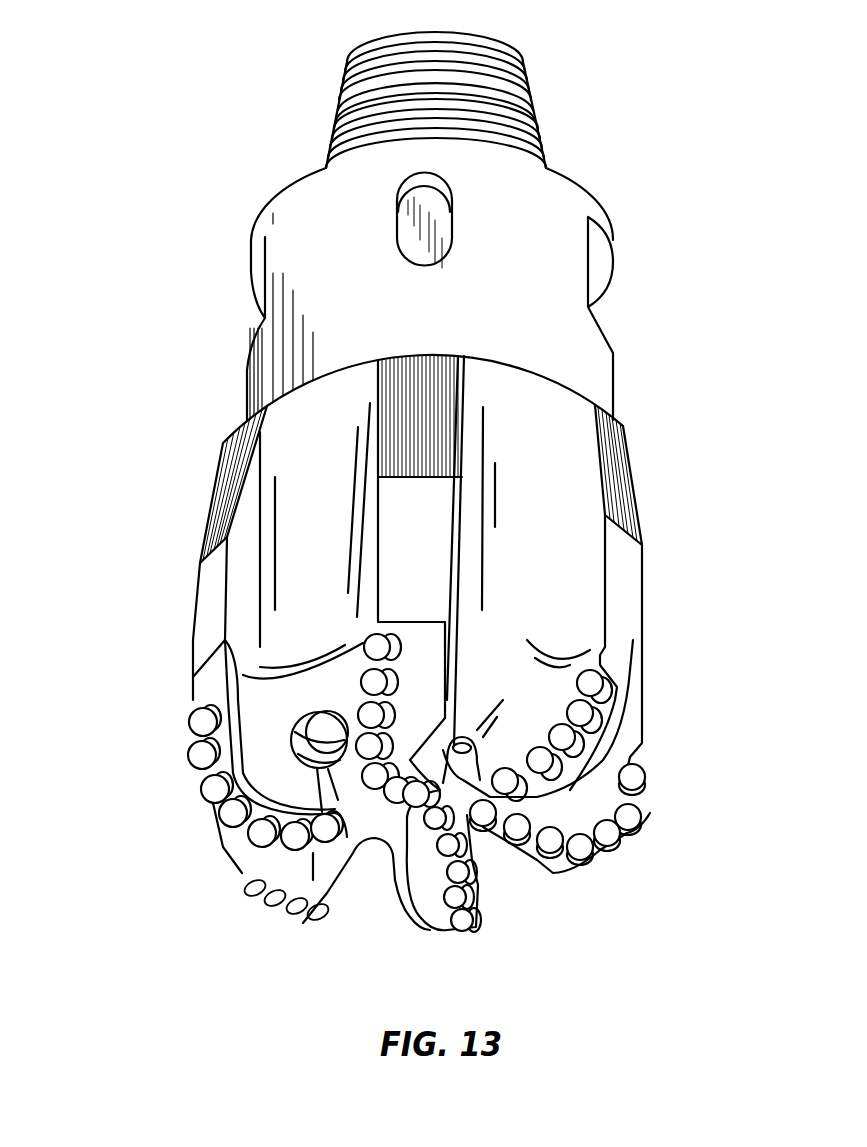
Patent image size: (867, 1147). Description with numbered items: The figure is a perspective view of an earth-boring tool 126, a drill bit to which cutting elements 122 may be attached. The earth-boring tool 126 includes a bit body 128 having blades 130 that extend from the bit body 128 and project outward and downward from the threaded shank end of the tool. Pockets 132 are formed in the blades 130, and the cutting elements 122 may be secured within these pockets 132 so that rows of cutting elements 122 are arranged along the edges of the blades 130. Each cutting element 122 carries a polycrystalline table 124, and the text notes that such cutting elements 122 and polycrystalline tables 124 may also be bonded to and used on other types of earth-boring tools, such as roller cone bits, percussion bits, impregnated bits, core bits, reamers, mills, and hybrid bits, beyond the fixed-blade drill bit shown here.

The earth-boring tool 126 is at (147, 128).
The bit body 128 is at (285, 487).
The blades 130 is at (250, 873).
The pockets 132 is at (220, 706).
The cutting elements 122 is at (205, 794).
The polycrystalline tables 124 is at (467, 898).